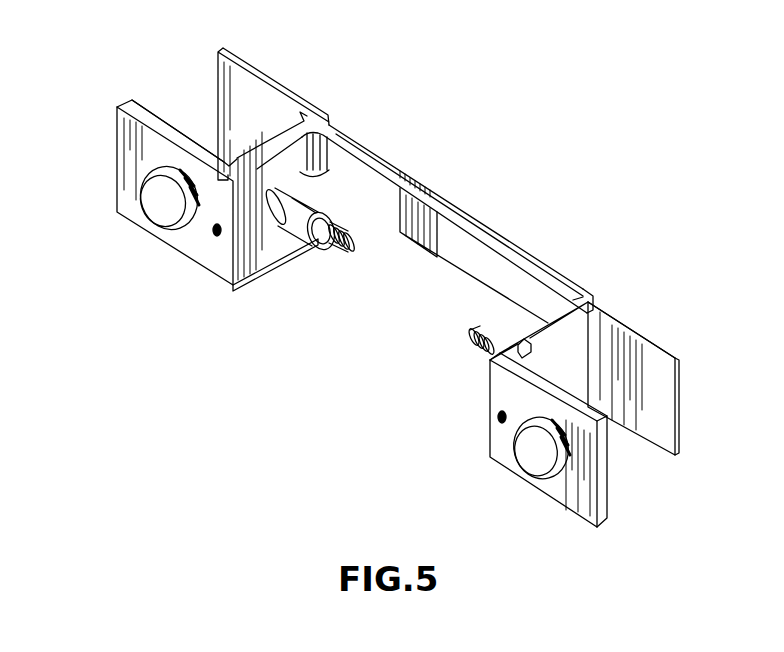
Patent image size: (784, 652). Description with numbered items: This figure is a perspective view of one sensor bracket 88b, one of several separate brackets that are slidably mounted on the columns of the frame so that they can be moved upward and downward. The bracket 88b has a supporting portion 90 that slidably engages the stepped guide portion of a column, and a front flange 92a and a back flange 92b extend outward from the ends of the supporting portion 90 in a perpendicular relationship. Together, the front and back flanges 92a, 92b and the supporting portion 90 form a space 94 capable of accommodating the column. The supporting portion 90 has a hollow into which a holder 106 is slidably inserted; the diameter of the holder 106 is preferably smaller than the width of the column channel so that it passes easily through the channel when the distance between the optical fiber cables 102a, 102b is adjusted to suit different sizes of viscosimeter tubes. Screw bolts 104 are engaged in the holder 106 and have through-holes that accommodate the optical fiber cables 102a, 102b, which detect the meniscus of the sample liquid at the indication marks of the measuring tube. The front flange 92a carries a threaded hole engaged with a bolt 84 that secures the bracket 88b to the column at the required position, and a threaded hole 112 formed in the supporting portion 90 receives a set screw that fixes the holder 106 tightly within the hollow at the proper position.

The bolt 84 is at (165, 219).
The sensor bracket 88b is at (388, 170).
The supporting portion 90 is at (232, 285).
The front flange 92a is at (127, 182).
The back flange 92b is at (285, 84).
The space 94 is at (197, 128).
The optical fiber cable 102a is at (350, 247).
The optical fiber cable 102b is at (470, 333).
The screw bolt 104 is at (316, 250).
The holder 106 is at (257, 273).
The threaded hole 112 is at (213, 232).